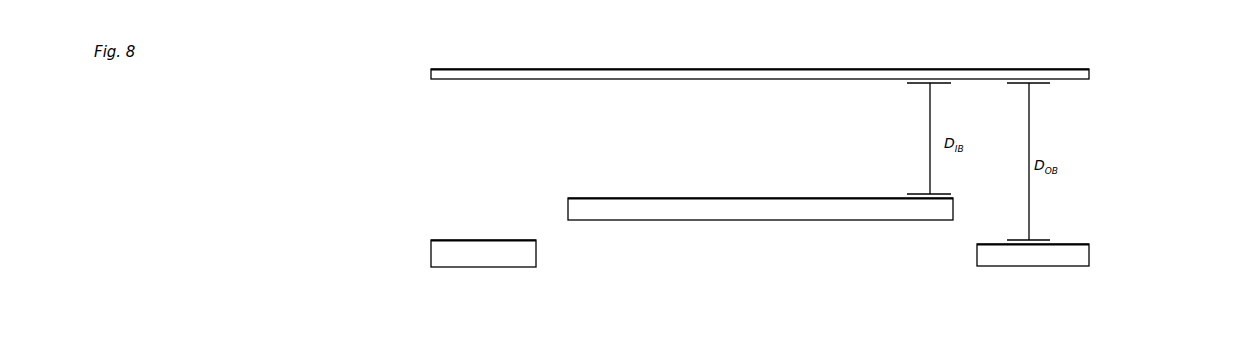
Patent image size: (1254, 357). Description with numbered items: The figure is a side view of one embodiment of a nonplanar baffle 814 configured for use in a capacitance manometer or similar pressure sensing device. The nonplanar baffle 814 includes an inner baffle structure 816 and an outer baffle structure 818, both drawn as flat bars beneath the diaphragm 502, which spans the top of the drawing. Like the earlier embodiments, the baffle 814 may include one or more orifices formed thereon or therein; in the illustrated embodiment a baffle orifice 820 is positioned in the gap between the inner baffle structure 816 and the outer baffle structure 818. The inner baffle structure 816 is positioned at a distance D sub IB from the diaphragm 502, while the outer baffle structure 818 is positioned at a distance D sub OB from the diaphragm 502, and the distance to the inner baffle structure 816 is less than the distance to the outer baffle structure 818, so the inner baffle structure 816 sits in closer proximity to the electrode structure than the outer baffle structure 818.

The diaphragm 502 is at (1089, 77).
The nonplanar baffle 814 is at (258, 182).
The inner baffle structure 816 is at (751, 206).
The outer baffle structure 818 is at (495, 258).
The baffle orifice 820 is at (571, 236).